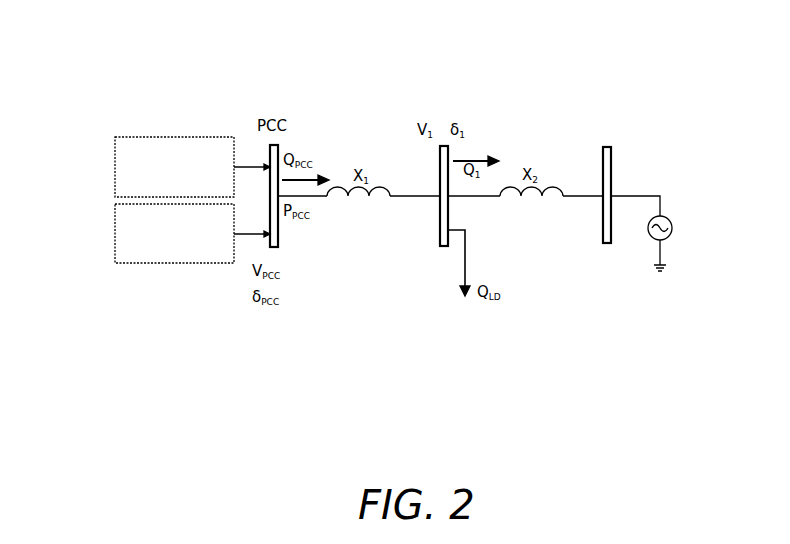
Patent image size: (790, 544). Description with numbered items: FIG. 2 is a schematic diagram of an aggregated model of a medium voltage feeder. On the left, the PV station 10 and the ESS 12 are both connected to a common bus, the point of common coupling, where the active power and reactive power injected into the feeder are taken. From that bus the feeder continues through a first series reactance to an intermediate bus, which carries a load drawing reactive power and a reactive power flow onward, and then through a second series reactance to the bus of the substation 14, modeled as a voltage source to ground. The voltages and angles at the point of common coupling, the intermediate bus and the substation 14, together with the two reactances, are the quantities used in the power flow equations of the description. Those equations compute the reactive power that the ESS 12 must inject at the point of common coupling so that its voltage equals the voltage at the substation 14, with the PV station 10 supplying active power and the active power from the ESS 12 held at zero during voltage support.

The PV station 10 is at (98, 140).
The ESS 12 is at (98, 212).
The substation 14 is at (680, 157).